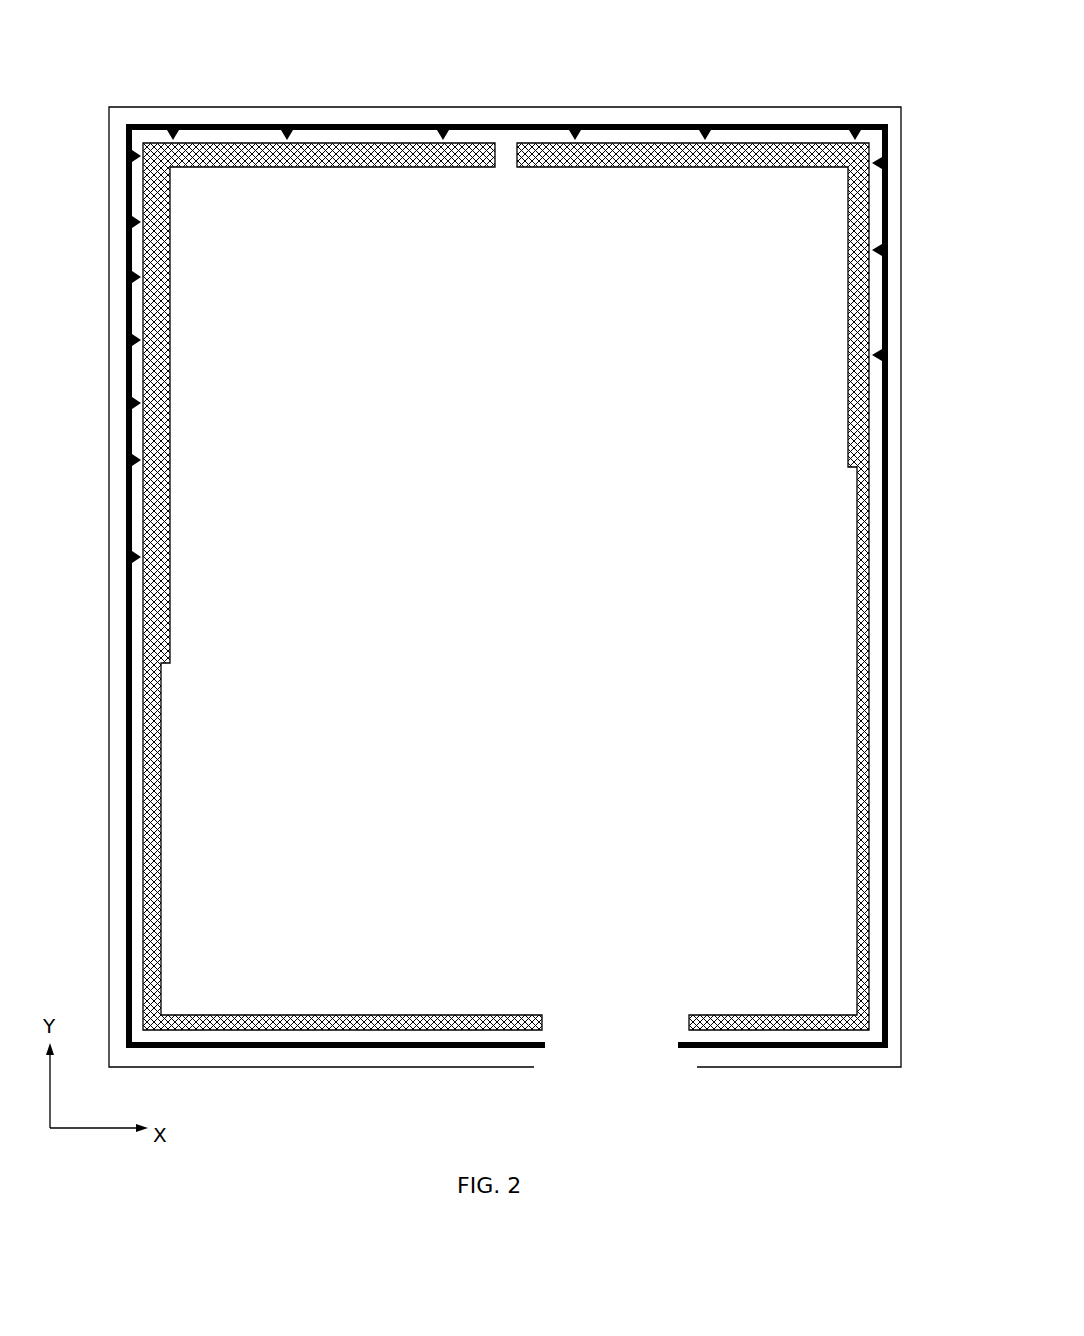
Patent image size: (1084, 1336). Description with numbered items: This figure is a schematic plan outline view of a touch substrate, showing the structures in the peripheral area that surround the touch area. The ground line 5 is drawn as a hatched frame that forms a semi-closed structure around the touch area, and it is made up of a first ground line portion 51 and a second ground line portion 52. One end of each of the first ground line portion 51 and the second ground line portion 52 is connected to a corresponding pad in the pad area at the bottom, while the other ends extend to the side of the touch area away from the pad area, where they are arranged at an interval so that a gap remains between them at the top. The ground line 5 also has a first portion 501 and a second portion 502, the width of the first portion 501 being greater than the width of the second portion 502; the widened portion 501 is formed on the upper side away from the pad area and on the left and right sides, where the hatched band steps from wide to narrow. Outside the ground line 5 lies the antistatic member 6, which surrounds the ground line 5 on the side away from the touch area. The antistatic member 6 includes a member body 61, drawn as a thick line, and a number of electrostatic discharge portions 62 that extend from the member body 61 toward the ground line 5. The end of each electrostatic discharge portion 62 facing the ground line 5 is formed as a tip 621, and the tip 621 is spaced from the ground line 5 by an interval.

The ground line 5 is at (551, 519).
The first ground line portion 51 is at (738, 519).
The second ground line portion 52 is at (477, 155).
The first portion 501 is at (858, 286).
The second portion 502 is at (858, 589).
The antistatic member 6 is at (467, 527).
The member body 61 is at (397, 125).
The electrostatic discharge portion 62 is at (466, 307).
The tip 621 is at (142, 156).